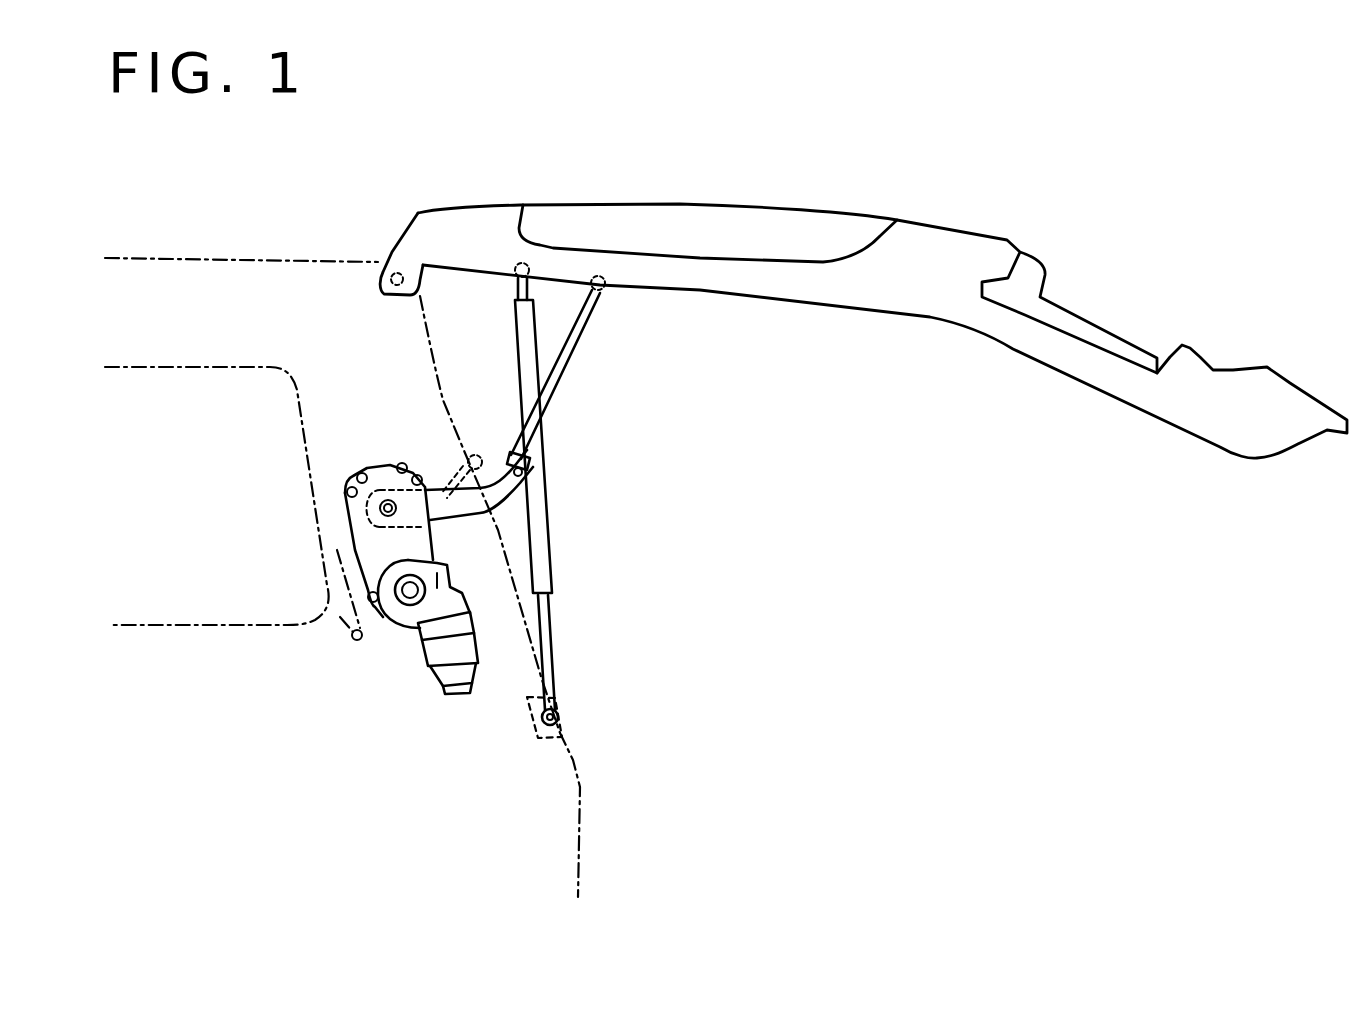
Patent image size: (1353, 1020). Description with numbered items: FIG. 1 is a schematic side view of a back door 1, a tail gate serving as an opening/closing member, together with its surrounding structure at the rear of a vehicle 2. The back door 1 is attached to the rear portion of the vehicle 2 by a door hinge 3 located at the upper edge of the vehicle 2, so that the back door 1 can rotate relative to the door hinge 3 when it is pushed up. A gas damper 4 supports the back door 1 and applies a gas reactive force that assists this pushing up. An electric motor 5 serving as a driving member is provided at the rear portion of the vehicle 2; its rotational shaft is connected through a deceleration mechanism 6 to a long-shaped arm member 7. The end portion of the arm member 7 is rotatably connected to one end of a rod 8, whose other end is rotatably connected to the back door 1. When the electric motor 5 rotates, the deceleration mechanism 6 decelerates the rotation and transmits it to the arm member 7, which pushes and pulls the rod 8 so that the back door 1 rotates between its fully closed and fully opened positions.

The back door 1 is at (1120, 404).
The vehicle 2 is at (213, 256).
The door hinge 3 is at (402, 296).
The gas damper 4 is at (546, 522).
The electric motor 5 is at (438, 658).
The deceleration mechanism 6 is at (390, 463).
The arm member 7 is at (447, 490).
The rod 8 is at (583, 327).